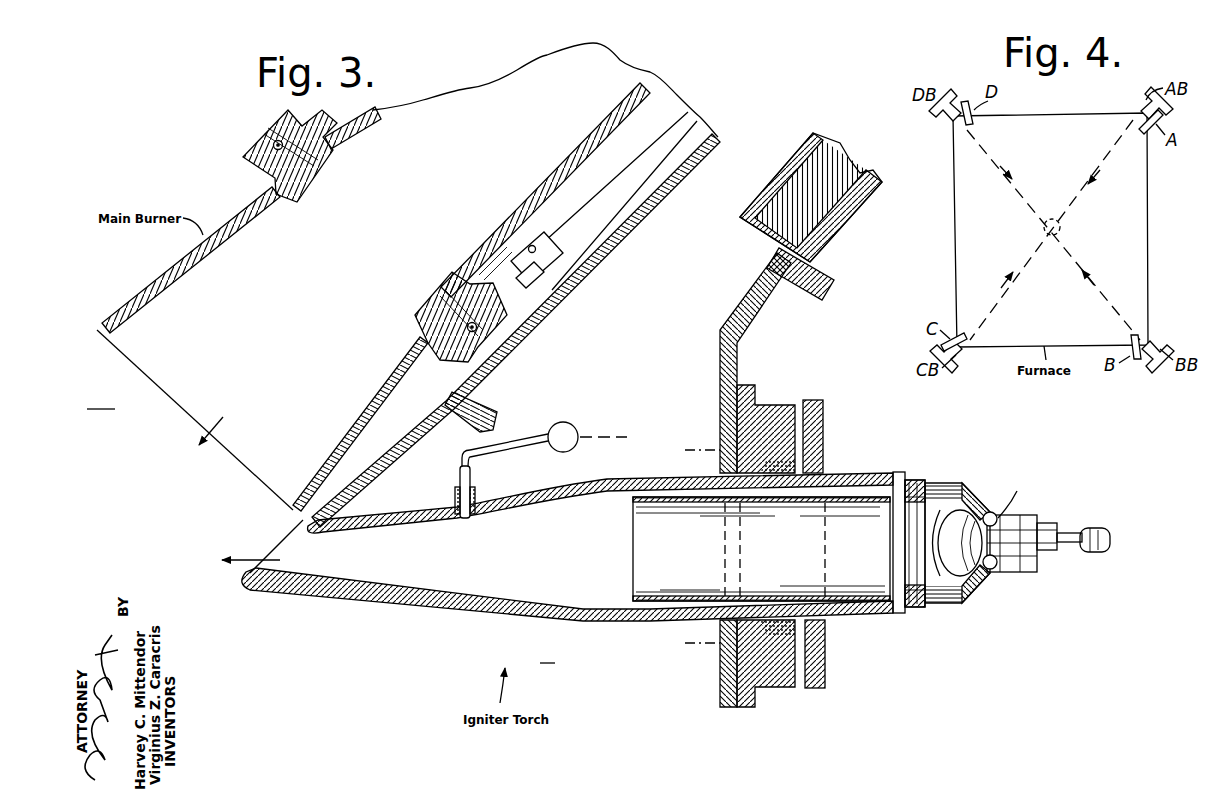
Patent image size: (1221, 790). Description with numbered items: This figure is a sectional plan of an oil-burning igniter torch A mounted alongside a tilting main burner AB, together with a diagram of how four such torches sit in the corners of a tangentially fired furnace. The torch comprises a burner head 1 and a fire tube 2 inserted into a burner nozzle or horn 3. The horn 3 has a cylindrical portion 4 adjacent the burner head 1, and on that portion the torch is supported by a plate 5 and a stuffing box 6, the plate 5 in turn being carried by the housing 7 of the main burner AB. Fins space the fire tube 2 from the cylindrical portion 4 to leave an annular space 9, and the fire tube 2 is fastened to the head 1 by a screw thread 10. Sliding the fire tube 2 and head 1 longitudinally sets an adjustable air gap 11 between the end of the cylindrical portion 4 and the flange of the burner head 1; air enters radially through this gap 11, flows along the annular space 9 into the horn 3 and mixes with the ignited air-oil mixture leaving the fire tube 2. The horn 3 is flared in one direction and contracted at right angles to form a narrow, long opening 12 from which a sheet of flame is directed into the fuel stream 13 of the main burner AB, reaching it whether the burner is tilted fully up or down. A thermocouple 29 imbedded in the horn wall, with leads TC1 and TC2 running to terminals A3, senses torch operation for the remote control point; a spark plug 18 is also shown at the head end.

The burner head 1 is at (948, 600).
The fire tube 2 is at (843, 489).
The burner nozzle or horn 3 is at (485, 613).
The cylindrical portion 4 is at (642, 623).
The plate 5 is at (720, 392).
The stuffing box 6 is at (815, 400).
The housing 7 is at (827, 278).
The annular space 9 is at (687, 604).
The screw thread 10 is at (912, 607).
The air gap 11 is at (890, 473).
The horn opening 12 is at (282, 548).
The fuel stream 13 is at (206, 447).
The spark plug 18 is at (1000, 566).
The thermocouple 29 is at (457, 495).
The terminals A3A3 A3 is at (568, 422).
The thermocouple lead 1 TC1 is at (495, 447).
The thermocouple lead 2 TC2 is at (497, 456).
The main burner AB is at (155, 390).
The igniter torch A is at (547, 620).